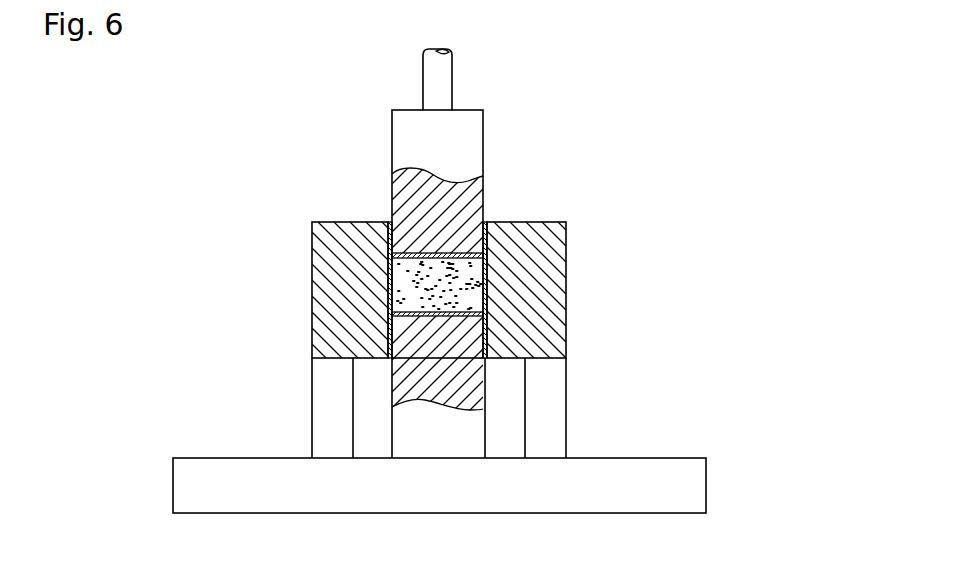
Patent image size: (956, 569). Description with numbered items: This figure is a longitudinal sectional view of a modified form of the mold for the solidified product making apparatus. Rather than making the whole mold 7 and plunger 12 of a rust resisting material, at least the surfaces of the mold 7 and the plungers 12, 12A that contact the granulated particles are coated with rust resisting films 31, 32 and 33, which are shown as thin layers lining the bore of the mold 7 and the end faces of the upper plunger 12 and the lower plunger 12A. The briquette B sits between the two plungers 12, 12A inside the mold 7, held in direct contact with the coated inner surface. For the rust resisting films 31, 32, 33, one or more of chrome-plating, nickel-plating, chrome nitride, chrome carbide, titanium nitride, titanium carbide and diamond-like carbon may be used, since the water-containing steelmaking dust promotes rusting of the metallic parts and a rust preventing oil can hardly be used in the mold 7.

The mold 7 is at (330, 278).
The plunger 12 is at (468, 135).
The plunger 12A is at (452, 347).
The rust resisting film 31 is at (410, 278).
The rust resisting film 32 is at (463, 312).
The rust resisting film 33 is at (462, 248).
The briquette B is at (458, 282).